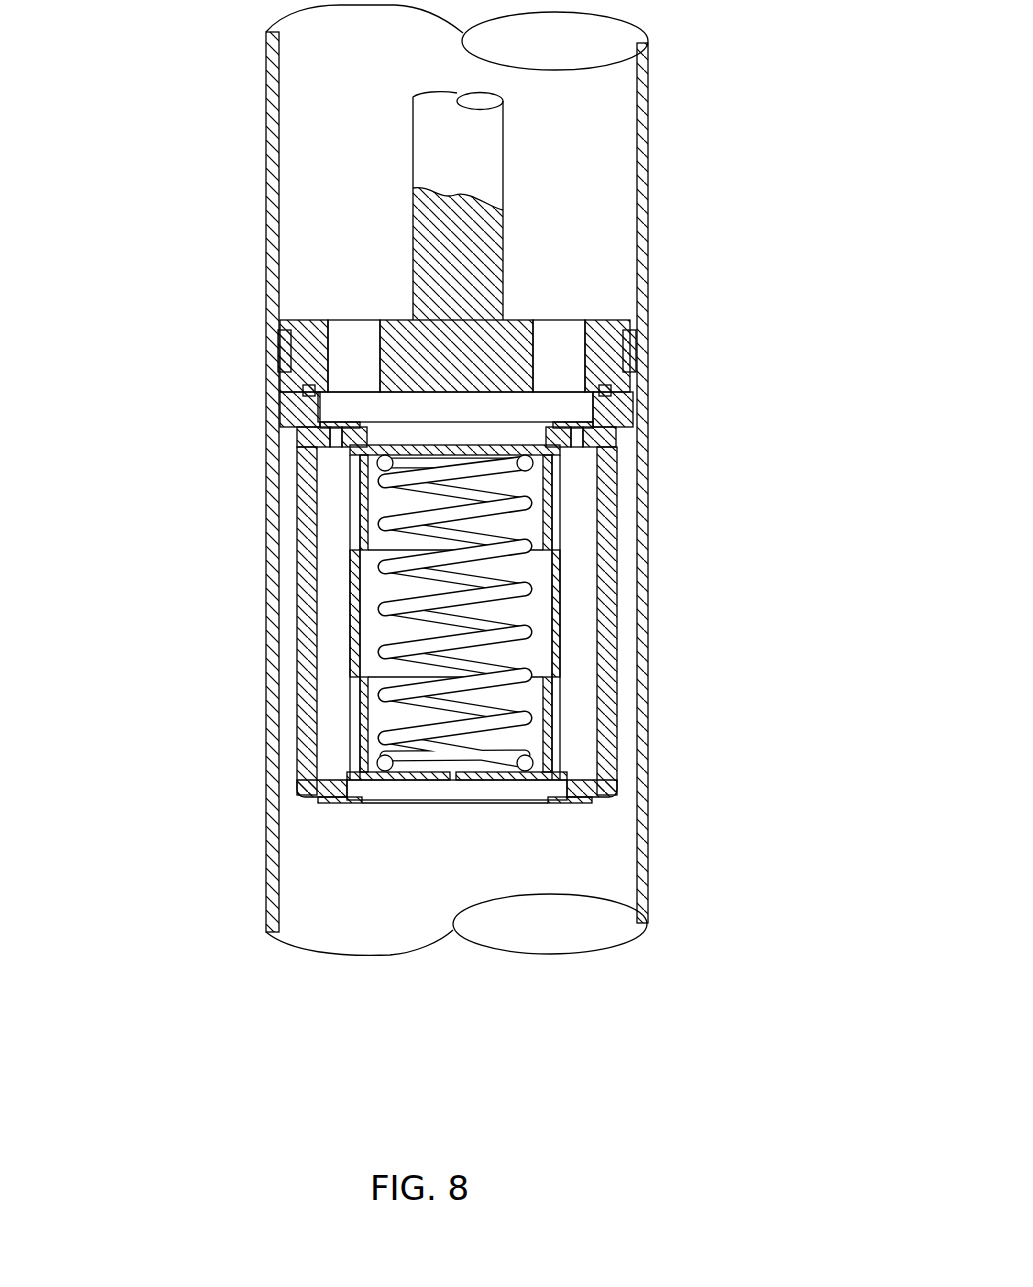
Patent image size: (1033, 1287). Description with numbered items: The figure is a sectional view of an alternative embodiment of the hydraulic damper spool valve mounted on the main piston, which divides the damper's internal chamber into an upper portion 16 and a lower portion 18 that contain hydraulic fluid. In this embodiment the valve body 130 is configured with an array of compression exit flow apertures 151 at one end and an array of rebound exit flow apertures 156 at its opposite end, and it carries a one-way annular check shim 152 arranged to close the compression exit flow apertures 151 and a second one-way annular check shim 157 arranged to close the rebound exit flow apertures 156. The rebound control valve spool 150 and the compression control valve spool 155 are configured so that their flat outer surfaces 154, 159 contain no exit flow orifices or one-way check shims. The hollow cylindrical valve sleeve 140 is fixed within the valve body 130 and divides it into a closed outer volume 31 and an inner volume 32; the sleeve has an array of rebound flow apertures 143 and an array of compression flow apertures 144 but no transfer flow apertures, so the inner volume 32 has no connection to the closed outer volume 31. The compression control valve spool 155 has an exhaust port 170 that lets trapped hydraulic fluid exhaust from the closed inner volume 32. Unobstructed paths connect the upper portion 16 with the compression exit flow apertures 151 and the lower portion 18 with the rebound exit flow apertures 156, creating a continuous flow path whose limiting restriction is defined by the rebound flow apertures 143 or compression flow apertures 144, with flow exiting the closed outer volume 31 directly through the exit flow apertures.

The upper portion 16 is at (603, 231).
The lower portion 18 is at (608, 875).
The one-way annular check shim 152 is at (337, 417).
The compression exit flow apertures 151 is at (583, 437).
The valve body 130 is at (607, 583).
The flat outer surface 154 is at (513, 443).
The hollow cylindrical valve sleeve 140 is at (353, 622).
The rebound flow apertures 143 is at (360, 480).
The compression flow apertures 144 is at (362, 754).
The compression control valve spool 155 is at (562, 746).
The rebound control valve spool 150 is at (566, 484).
The closed outer volume 31 is at (327, 710).
The inner volume 32 is at (540, 622).
The exhaust port 170 is at (452, 777).
The flat outer surface 159 is at (383, 787).
The rebound exit flow apertures 156 is at (575, 790).
The second one-way annular check shim 157 is at (572, 803).